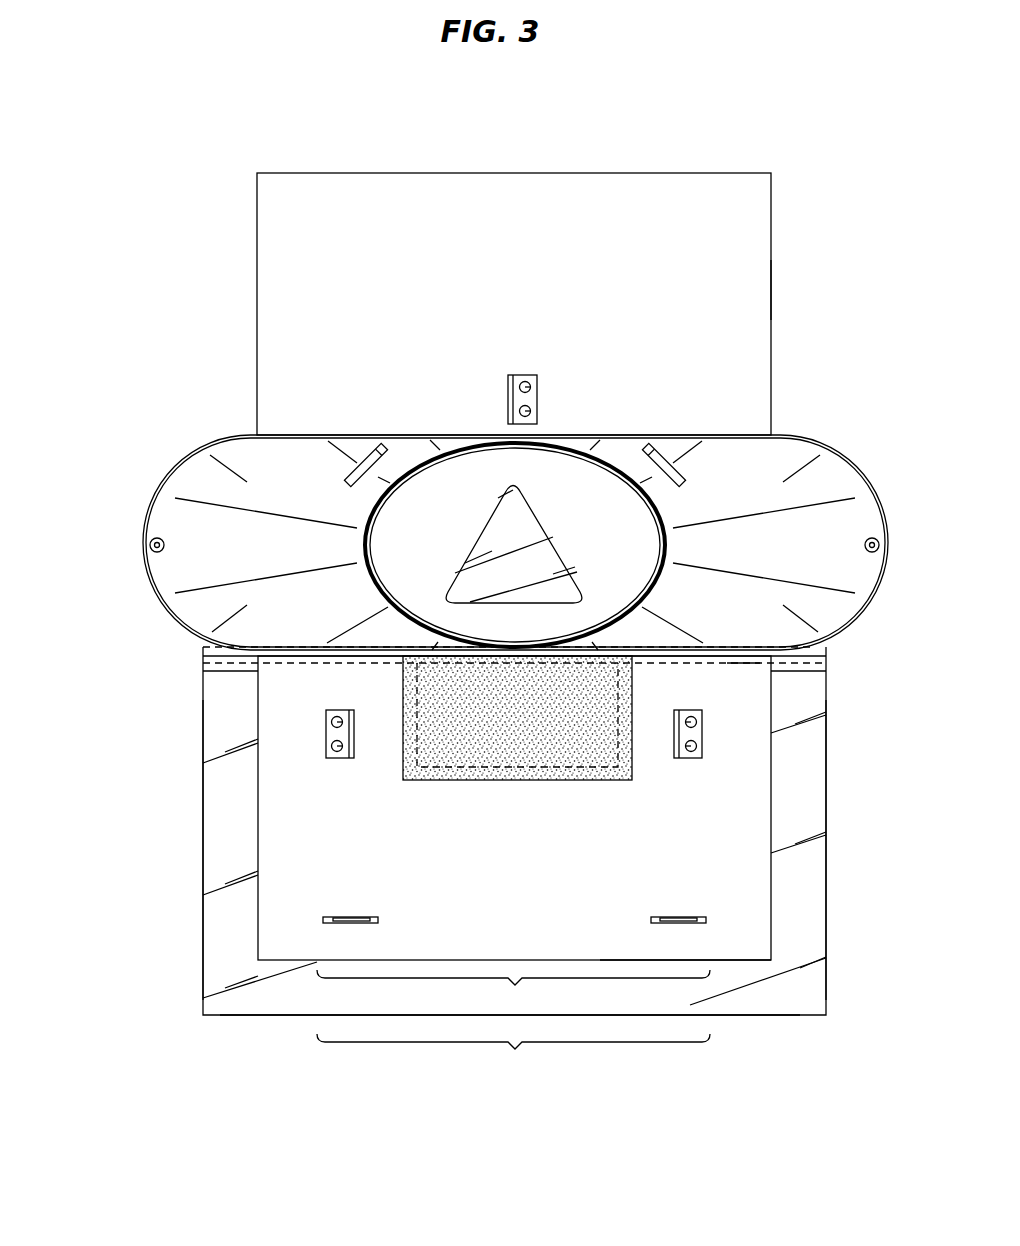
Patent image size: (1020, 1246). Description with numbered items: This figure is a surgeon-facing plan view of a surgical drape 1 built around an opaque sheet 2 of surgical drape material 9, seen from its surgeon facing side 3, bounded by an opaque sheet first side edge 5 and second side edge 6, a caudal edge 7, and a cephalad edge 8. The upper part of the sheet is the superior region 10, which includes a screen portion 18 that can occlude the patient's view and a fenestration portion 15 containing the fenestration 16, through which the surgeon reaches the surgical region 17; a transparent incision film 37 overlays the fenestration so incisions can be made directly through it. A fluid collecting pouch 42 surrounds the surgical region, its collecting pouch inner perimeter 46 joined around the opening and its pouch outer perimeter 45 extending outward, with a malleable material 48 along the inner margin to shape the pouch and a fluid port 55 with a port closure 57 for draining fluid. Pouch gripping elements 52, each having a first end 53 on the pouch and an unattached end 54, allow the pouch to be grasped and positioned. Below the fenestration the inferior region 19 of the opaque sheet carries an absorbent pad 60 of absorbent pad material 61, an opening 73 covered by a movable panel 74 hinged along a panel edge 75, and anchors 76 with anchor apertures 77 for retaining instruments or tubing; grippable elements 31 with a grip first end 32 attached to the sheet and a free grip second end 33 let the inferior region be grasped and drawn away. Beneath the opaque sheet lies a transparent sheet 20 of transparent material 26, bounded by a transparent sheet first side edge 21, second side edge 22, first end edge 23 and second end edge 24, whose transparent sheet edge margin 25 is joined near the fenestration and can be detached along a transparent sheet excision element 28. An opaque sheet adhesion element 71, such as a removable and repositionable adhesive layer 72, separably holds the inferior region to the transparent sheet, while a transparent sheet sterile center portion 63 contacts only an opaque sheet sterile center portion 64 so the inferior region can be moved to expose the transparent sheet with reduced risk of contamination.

The surgical drape 1 is at (785, 103).
The opaque sheet 2 is at (572, 434).
The surgeon facing side 3 is at (786, 347).
The opaque sheet first side edge 5 is at (258, 798).
The opaque sheet second side edge 6 is at (771, 782).
The opaque sheet caudal edge 7 is at (742, 961).
The opaque sheet cephalad edge 8 is at (313, 173).
The surgical drape material 9 is at (755, 293).
The superior region 10 is at (55, 174).
The fenestration portion 15 is at (93, 445).
The fenestration 16 is at (568, 547).
The surgical region 17 is at (485, 537).
The screen portion 18 is at (93, 174).
The inferior region 19 is at (55, 656).
The transparent sheet 20 is at (838, 846).
The transparent sheet first side edge 21 is at (203, 945).
The transparent sheet second side edge 22 is at (826, 926).
The transparent sheet first end edge 23 is at (813, 647).
The transparent sheet second end edge 24 is at (255, 1015).
The transparent sheet edge margin 25 is at (826, 656).
The transparent material 26 is at (812, 890).
The transparent sheet excision element 28 is at (805, 672).
The grippable element 31 is at (355, 925).
The grip first end 32 is at (372, 916).
The grip second end 33 is at (333, 917).
The transparent incision film 37 is at (530, 520).
The fluid collecting pouch 42 is at (864, 457).
The pouch outer perimeter 45 is at (875, 492).
The collecting pouch inner perimeter 46 is at (664, 540).
The malleable material 48 is at (648, 597).
The pouch gripping element 52 is at (379, 446).
The pouch gripping element first end 53 is at (359, 445).
The pouch gripping element unattached end 54 is at (363, 485).
The fluid port 55 is at (153, 540).
The port closure 57 is at (160, 552).
The absorbent pad 60 is at (546, 750).
The absorbent pad material 61 is at (584, 762).
The transparent sheet sterile center portion 63 is at (513, 1054).
The opaque sheet sterile center portion 64 is at (513, 991).
The opaque sheet adhesion element 71 is at (808, 707).
The removable and repositionable adhesive layer 72 is at (727, 666).
The opening 73 is at (403, 757).
The movable panel 74 is at (581, 729).
The panel edge 75 is at (632, 762).
The anchor 76 is at (512, 395).
The anchor aperture 77 is at (531, 411).